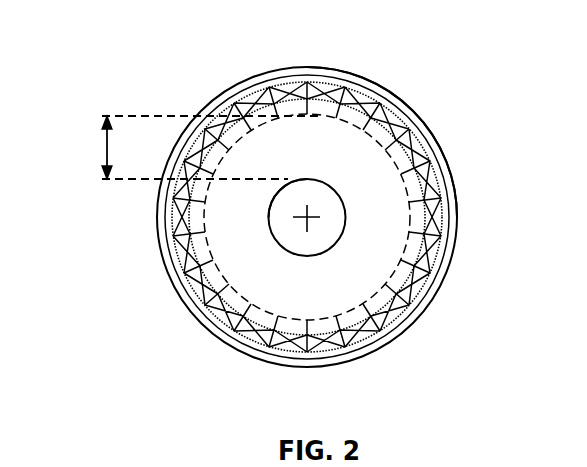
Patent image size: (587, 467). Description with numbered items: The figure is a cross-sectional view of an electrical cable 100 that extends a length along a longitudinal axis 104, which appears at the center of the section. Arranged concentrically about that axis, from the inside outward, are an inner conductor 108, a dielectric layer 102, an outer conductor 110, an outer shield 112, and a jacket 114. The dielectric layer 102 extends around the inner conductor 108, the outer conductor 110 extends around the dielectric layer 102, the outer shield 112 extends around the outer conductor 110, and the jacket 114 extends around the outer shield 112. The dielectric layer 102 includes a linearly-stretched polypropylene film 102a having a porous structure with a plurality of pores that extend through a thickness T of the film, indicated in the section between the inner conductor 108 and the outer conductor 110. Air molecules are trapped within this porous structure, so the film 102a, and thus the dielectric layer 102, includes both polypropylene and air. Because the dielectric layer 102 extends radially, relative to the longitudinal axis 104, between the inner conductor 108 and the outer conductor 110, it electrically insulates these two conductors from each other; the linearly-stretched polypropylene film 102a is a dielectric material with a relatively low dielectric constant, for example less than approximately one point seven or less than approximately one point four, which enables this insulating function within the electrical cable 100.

The electrical cable 100 is at (404, 26).
The dielectric layer 102 is at (390, 174).
The linearly-stretched polypropylene film 102a is at (307, 217).
The longitudinal axis 104 is at (278, 243).
The inner conductor 108 is at (335, 171).
The outer conductor 110 is at (436, 201).
The outer shield 112 is at (445, 276).
The jacket 114 is at (444, 312).
The thickness T is at (107, 145).